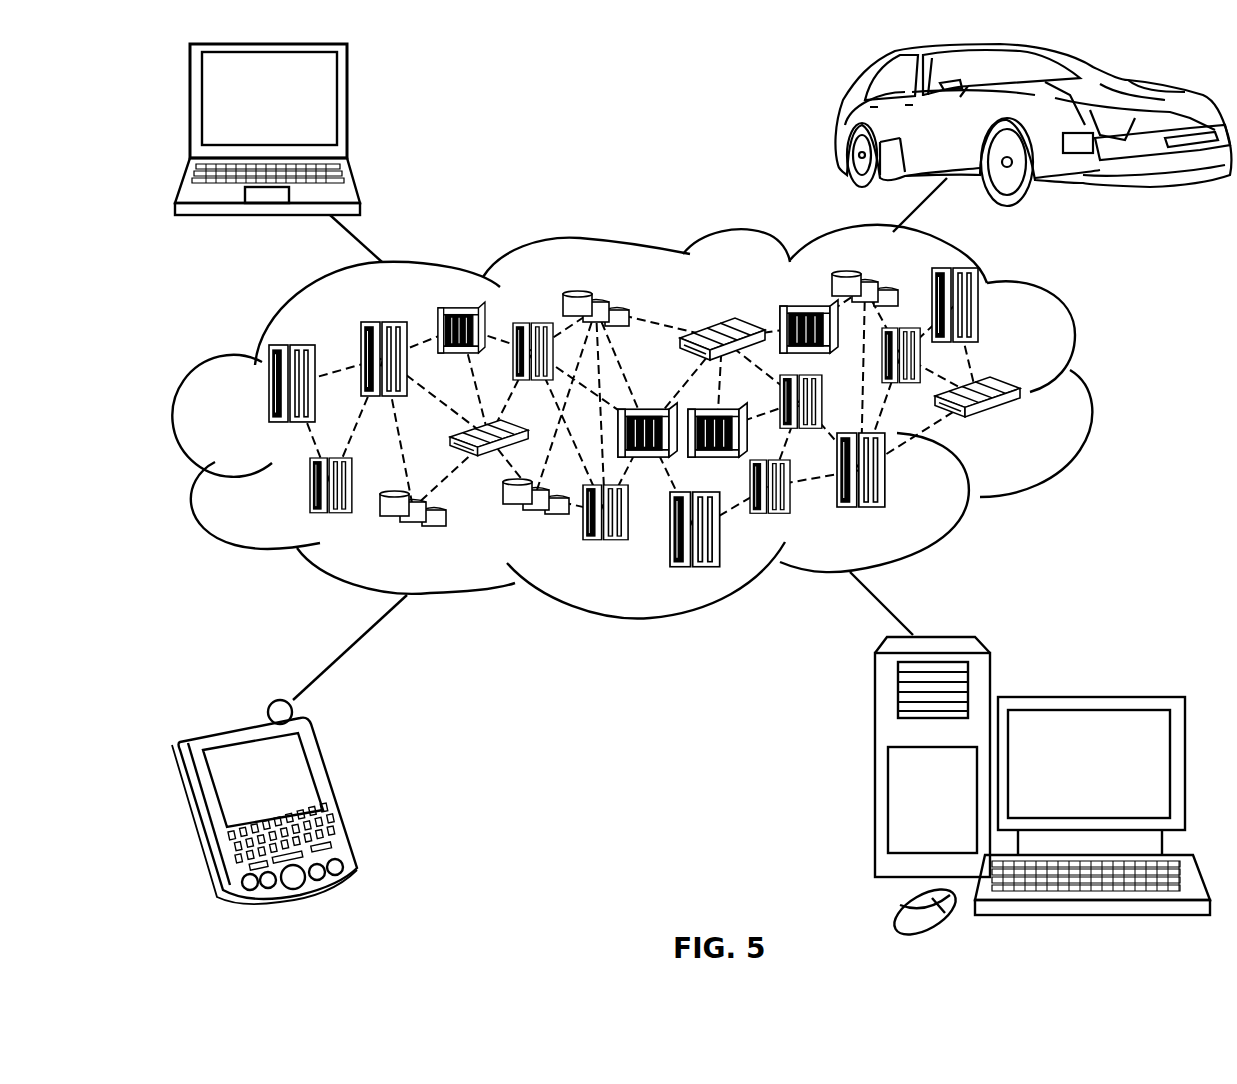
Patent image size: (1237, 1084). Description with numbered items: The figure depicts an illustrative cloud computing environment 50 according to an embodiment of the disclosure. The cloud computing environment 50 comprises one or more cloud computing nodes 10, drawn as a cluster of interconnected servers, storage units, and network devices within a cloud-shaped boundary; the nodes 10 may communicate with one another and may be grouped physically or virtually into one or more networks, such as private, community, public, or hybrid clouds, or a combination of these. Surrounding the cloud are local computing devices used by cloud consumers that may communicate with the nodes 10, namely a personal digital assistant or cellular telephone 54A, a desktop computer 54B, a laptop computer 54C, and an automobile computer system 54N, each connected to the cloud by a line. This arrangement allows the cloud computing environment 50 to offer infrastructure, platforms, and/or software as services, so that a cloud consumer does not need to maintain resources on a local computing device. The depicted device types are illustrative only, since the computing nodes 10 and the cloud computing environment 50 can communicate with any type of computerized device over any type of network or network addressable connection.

The cloud computing nodes 10 is at (1028, 427).
The cloud computing environment 50 is at (1088, 393).
The personal digital assistant (PDA) or cellular telephone 54A is at (335, 793).
The desktop computer 54B is at (1090, 697).
The laptop computer 54C is at (347, 108).
The automobile computer system 54N is at (840, 127).